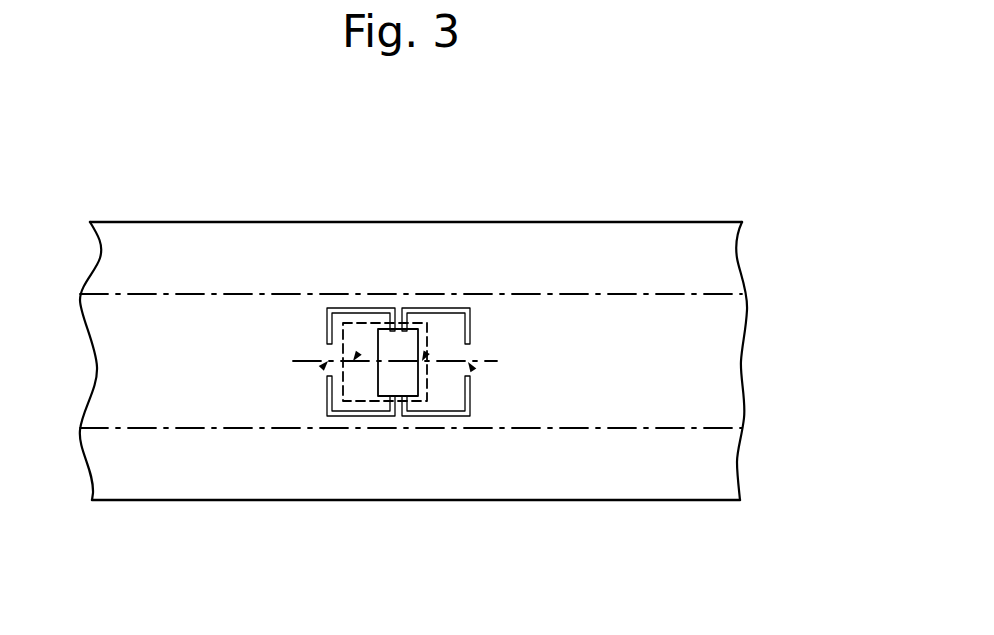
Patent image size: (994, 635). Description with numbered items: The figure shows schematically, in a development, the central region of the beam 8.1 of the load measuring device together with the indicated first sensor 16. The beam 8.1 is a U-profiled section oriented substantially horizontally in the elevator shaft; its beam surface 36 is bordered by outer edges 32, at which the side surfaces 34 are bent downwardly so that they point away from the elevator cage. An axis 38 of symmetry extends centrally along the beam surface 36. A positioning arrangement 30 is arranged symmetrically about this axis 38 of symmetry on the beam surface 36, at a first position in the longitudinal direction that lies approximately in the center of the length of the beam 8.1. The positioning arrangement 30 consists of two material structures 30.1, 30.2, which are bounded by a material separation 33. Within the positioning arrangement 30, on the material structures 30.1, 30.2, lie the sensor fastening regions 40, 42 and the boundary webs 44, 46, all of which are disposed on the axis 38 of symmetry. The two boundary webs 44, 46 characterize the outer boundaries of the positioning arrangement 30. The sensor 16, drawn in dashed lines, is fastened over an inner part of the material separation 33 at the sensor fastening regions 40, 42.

The beam 8.1 is at (623, 477).
The sensor 16 is at (367, 390).
The positioning arrangement 30 is at (337, 430).
The material structure 30.1 is at (328, 308).
The material structure 30.2 is at (443, 385).
The outer edge 32 is at (717, 293).
The material separation 33 is at (403, 413).
The side surface 34 is at (637, 243).
The beam surface 36 is at (695, 340).
The axis of symmetry 38 is at (497, 361).
The sensor fastening region 40 is at (353, 361).
The sensor fastening region 42 is at (422, 361).
The boundary web 44 is at (328, 361).
The boundary web 46 is at (468, 362).